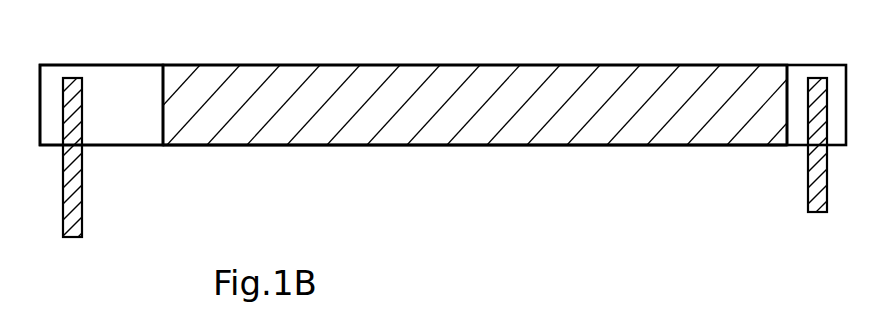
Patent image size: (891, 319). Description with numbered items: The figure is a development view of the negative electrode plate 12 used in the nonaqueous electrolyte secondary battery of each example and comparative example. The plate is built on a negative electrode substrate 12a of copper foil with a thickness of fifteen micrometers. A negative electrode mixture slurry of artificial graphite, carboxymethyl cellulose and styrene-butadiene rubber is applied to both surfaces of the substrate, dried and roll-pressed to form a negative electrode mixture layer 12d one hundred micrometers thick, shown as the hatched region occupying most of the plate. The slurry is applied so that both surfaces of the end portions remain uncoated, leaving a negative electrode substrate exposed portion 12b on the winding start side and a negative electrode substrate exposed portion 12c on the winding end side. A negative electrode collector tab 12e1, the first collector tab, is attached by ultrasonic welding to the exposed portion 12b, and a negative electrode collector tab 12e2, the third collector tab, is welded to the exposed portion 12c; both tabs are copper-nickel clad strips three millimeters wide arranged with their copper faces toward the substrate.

The negative electrode plate 12 is at (838, 40).
The negative electrode substrate 12a is at (297, 147).
The negative electrode substrate exposed portion on the winding start side 12b is at (785, 140).
The negative electrode substrate exposed portion on the winding end side 12c is at (108, 83).
The negative electrode mixture layer 12d is at (430, 140).
The negative electrode collector tab 12e1 is at (808, 205).
The negative electrode collector tab 12e2 is at (73, 197).